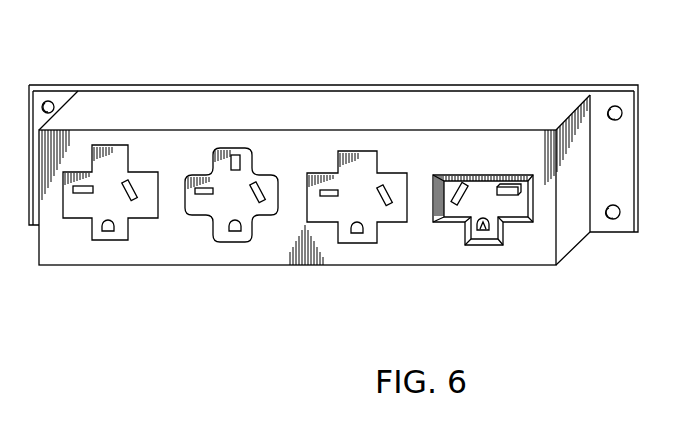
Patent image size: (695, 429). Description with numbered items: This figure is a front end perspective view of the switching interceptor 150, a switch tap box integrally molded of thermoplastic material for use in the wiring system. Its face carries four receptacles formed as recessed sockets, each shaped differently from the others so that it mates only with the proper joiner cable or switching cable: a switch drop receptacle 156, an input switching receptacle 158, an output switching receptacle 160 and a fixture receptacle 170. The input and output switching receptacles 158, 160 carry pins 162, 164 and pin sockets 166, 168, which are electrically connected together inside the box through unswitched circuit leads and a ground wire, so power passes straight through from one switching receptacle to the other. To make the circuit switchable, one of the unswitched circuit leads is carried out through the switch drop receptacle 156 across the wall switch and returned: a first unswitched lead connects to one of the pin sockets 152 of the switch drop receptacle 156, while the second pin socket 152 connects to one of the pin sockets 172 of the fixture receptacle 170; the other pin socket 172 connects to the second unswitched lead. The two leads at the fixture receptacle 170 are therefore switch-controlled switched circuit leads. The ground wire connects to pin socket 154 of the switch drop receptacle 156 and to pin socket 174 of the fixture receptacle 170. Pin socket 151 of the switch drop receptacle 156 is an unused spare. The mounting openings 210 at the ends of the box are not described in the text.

The switching interceptor 150 is at (410, 85).
The pin socket 151 is at (237, 155).
The pin sockets 152 is at (256, 191).
The pin socket 154 is at (236, 232).
The switch drop receptacle 156 is at (252, 174).
The input switching receptacle 158 is at (511, 183).
The output switching receptacle 160 is at (396, 186).
The pin 162 is at (500, 184).
The pin 164 is at (483, 232).
The pin socket 166 is at (357, 234).
The pin socket 168 is at (382, 196).
The fixture receptacle 170 is at (115, 157).
The pin sockets 172 is at (125, 200).
The pin socket 174 is at (108, 232).
The mounting holes 210 is at (53, 66).